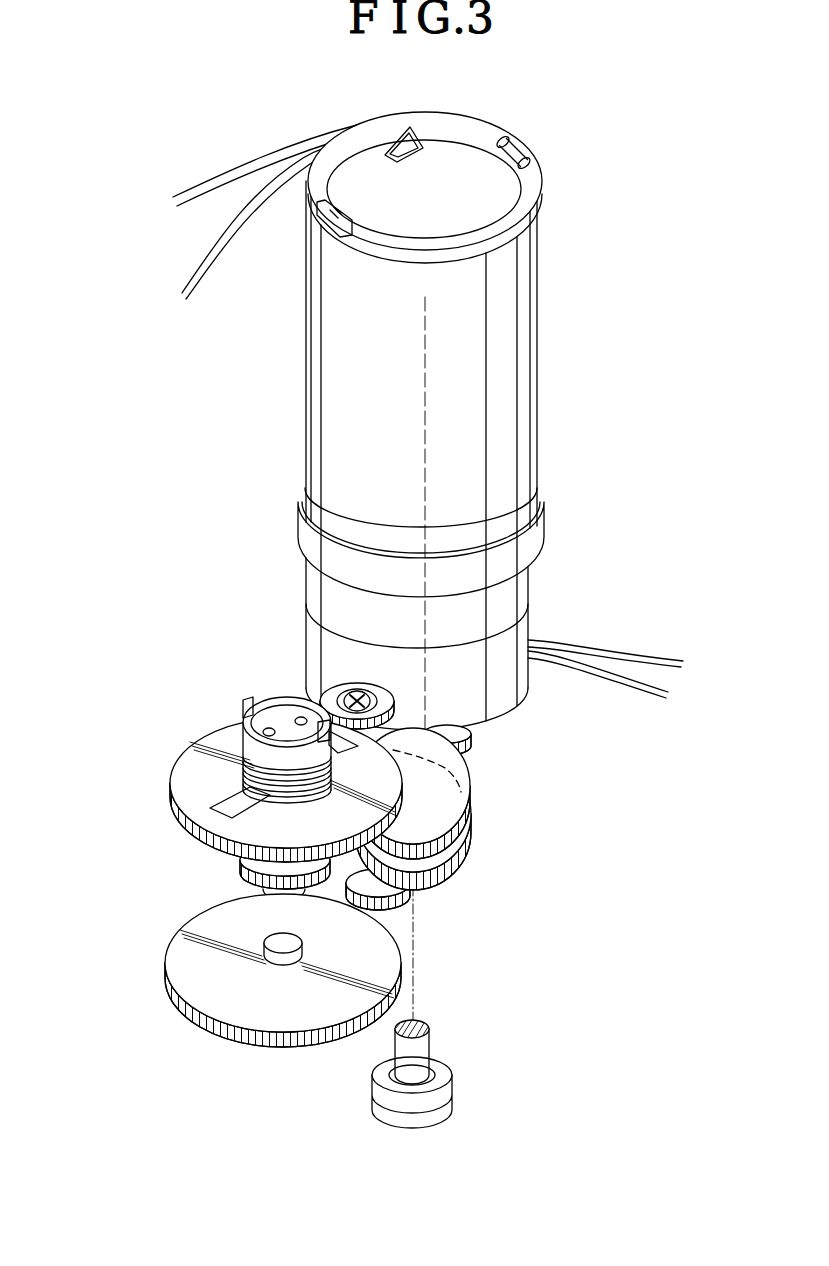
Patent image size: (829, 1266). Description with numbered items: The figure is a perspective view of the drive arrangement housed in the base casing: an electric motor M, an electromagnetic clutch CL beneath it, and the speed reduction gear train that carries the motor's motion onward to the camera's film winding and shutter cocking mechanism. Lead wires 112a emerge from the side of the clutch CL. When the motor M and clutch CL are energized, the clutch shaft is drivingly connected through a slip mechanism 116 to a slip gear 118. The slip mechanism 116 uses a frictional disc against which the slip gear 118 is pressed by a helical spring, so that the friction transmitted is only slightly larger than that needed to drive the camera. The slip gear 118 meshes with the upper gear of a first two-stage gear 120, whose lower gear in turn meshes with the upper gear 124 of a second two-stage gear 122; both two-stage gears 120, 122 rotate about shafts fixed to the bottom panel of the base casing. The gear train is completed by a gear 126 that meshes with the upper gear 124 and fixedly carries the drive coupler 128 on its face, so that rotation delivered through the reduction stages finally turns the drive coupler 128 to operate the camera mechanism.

The motor M is at (514, 307).
The clutch CL is at (518, 630).
The lead wires 112a is at (685, 662).
The slip mechanism 116 is at (440, 1080).
The slip gear 118 is at (462, 733).
The first two-stage gear 120 is at (447, 850).
The second two-stage gear 122 is at (232, 1003).
The upper gear 124 is at (452, 780).
The gear 126 is at (188, 790).
The drive coupler 128 is at (252, 698).